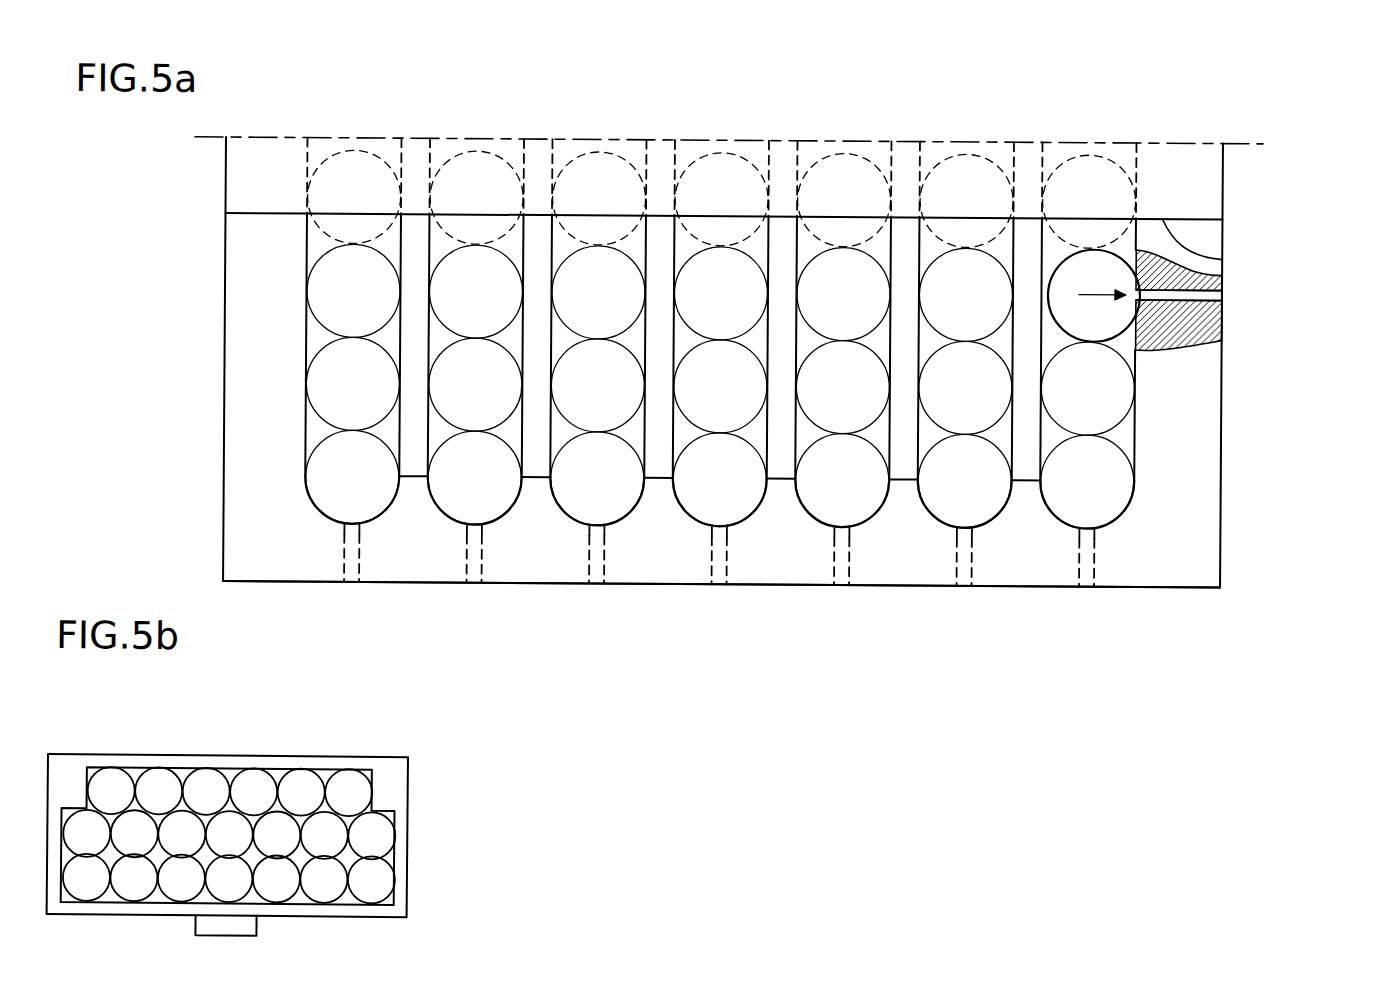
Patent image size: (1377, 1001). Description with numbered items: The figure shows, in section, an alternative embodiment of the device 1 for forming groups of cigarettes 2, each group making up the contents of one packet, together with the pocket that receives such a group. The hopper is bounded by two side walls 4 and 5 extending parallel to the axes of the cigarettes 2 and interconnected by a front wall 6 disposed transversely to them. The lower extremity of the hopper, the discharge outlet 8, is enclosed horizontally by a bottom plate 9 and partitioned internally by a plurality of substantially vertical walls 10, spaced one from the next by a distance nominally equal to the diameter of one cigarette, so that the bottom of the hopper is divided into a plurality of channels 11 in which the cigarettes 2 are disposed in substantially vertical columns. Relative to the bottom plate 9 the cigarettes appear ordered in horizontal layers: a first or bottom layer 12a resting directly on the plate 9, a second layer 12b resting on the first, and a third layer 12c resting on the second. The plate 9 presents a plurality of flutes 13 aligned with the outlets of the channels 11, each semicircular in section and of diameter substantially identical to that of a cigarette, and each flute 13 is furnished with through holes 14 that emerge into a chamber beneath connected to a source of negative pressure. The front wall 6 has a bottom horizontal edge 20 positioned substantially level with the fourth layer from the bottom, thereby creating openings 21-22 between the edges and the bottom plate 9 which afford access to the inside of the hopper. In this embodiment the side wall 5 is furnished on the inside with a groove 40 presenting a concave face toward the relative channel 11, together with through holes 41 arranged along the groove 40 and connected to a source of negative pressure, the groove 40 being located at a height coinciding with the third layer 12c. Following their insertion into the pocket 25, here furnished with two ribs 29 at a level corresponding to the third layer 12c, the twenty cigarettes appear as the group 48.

In FIG. 5A, the device 1 is at (1277, 220).
In FIG. 5A, the cigarettes 2 is at (453, 277).
In FIG. 5A, the side wall 4 is at (226, 195).
In FIG. 5A, the side wall 5 is at (1224, 187).
In FIG. 5A, the front wall 6 is at (1185, 168).
In FIG. 5A, the discharge outlet 8 is at (222, 291).
In FIG. 5A, the bottom plate 9 is at (543, 563).
In FIG. 5A, the vertical walls 10 is at (908, 160).
In FIG. 5A, the channels 11 is at (678, 248).
In FIG. 5A, the first or bottom layer 12a is at (307, 482).
In FIG. 5A, the second layer 12b is at (307, 383).
In FIG. 5A, the third layer 12c is at (307, 293).
In FIG. 5A, the flutes 13 is at (570, 510).
In FIG. 5A, the through holes 14 is at (958, 555).
In FIG. 5A, the bottom horizontal edges 20 is at (1223, 253).
In FIG. 5A, the openings 21-22 is at (1230, 430).
In FIG. 5A, the groove 40 is at (1137, 302).
In FIG. 5A, the through holes 41 is at (1197, 291).
In FIG. 5B, the pocket 25 is at (410, 801).
In FIG. 5B, the horizontal rib 29 is at (68, 772).
In FIG. 5B, the group 48 is at (387, 857).